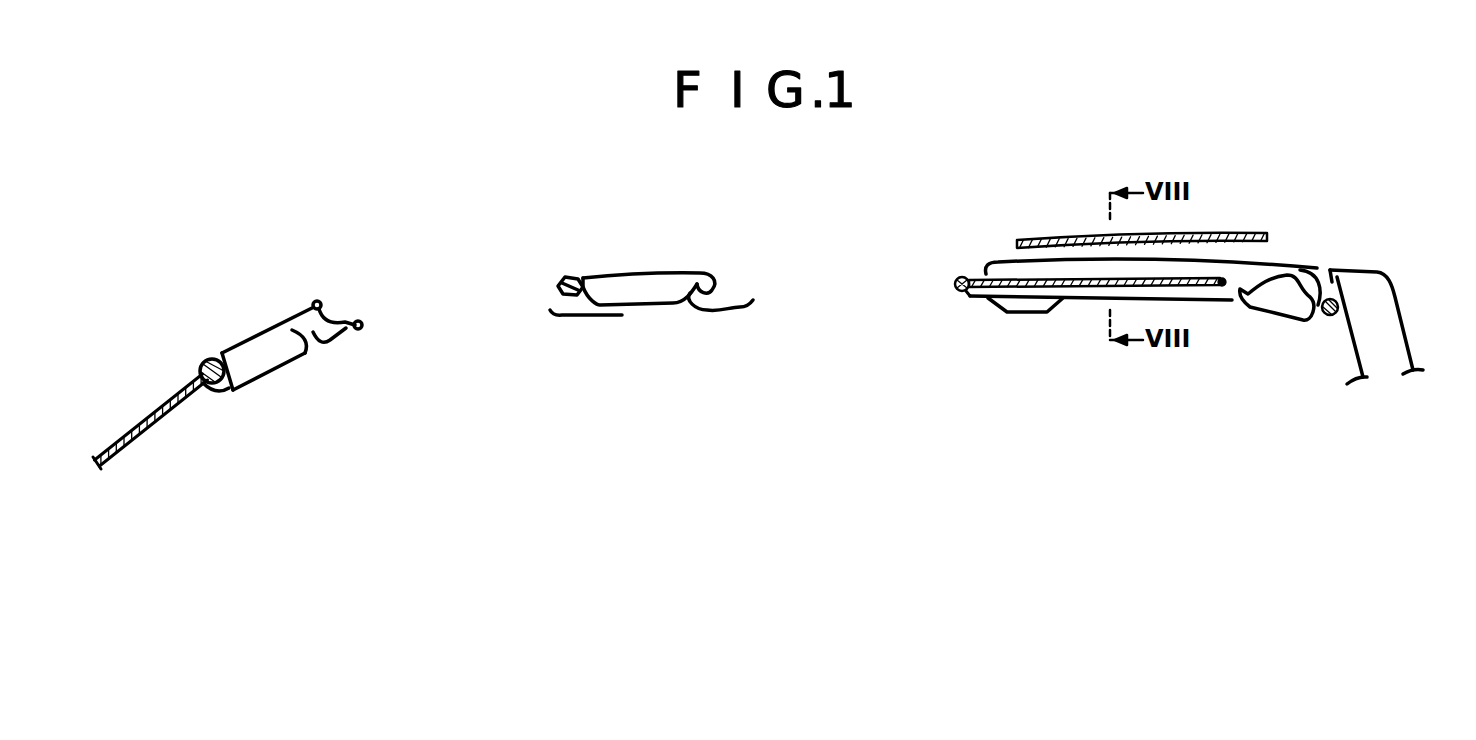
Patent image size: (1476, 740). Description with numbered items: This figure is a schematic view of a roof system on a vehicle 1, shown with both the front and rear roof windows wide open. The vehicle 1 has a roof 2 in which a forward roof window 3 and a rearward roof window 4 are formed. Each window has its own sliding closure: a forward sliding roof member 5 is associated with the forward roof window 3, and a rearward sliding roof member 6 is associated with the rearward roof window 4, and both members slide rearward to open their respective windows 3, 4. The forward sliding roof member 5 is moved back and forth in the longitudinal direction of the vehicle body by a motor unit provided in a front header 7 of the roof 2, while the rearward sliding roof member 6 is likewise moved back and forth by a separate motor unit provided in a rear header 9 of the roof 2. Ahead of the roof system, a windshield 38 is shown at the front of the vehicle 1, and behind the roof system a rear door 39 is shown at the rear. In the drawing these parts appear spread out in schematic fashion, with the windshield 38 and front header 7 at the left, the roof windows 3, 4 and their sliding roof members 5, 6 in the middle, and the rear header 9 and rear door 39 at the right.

The vehicle 1 is at (1311, 165).
The roof 2 is at (1064, 203).
The forward roof window 3 is at (447, 308).
The rearward roof window 4 is at (850, 290).
The forward sliding roof member 5 is at (1237, 233).
The rearward sliding roof member 6 is at (1197, 288).
The front header 7 is at (274, 320).
The rear header 9 is at (1307, 270).
The windshield 38 is at (163, 405).
The rear door 39 is at (1407, 330).